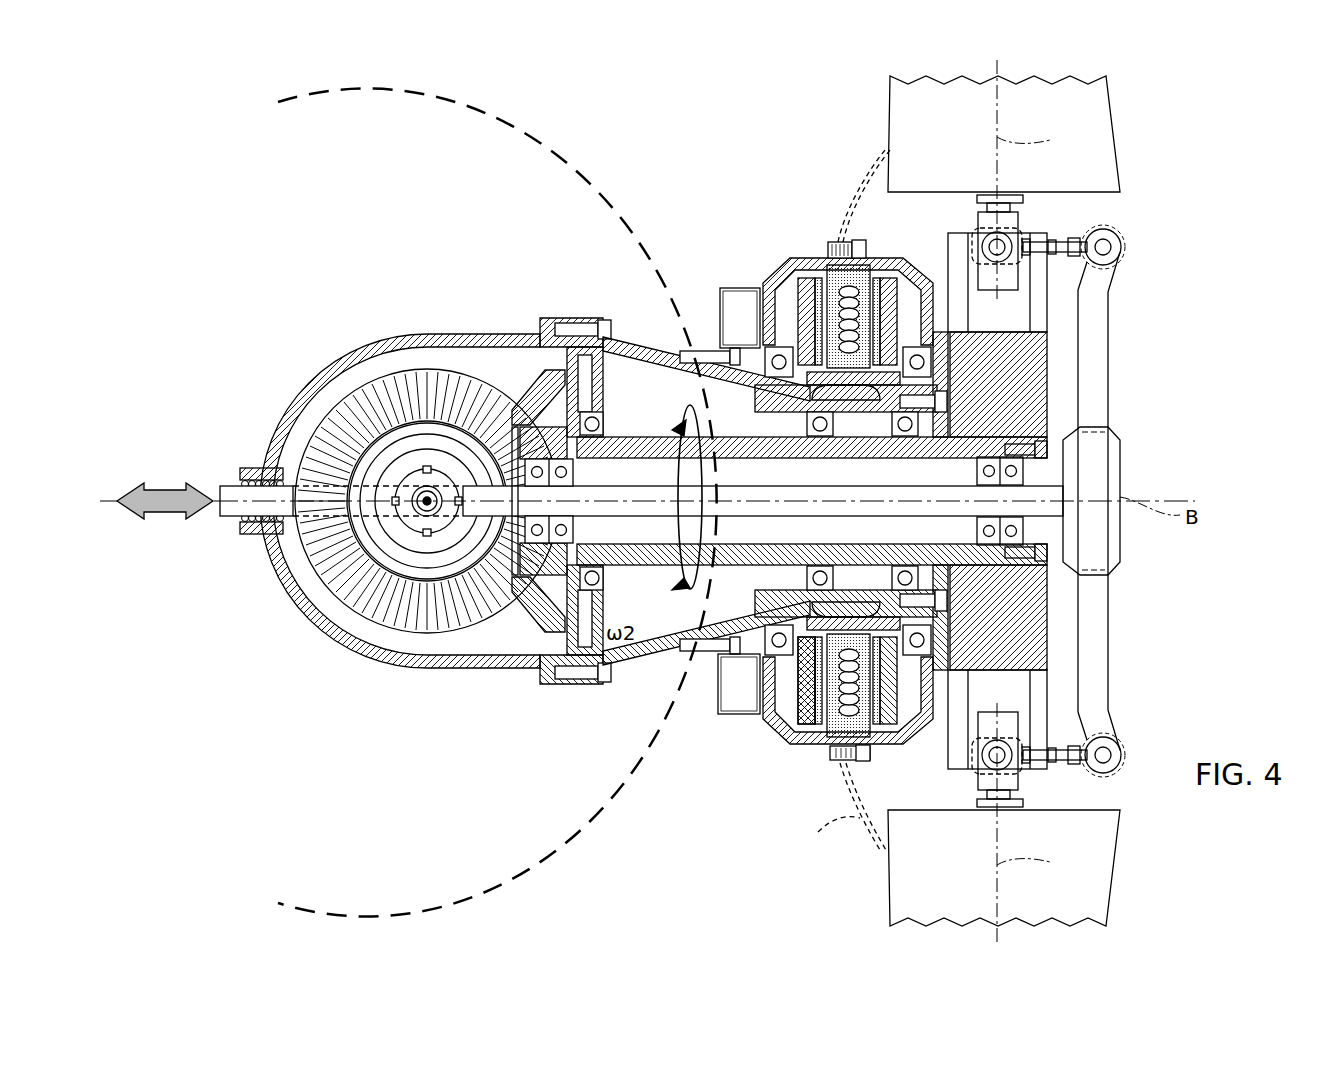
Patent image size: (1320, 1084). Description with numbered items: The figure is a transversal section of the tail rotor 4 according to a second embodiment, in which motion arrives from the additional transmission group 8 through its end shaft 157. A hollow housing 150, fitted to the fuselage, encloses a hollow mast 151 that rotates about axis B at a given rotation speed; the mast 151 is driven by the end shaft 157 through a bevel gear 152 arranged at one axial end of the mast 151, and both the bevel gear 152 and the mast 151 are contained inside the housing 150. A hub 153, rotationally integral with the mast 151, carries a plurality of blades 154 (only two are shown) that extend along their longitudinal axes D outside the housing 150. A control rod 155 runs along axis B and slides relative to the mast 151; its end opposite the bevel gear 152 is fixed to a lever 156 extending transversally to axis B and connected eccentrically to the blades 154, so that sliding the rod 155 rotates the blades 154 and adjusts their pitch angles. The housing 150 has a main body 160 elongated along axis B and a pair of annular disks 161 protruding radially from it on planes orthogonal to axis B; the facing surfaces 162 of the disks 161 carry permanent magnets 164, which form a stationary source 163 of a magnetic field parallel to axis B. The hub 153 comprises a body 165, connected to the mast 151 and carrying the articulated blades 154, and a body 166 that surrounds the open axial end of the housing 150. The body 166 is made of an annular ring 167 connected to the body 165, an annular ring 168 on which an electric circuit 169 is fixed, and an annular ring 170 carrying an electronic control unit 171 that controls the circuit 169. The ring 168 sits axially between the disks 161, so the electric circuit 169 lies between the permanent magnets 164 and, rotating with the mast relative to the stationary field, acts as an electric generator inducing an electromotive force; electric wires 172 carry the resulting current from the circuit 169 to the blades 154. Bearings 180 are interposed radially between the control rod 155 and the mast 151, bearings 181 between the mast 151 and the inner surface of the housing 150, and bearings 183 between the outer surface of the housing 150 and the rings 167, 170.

The tail rotor 4 is at (694, 246).
The additional transmission group 8 is at (425, 353).
The hollow housing 150 is at (392, 672).
The hollow mast 151 is at (740, 560).
The bevel gear 152 is at (550, 595).
The hub 153 is at (1010, 380).
The blades 154 is at (1118, 146).
The control rod 155 is at (1050, 508).
The lever 156 is at (1088, 672).
The end shaft 157 is at (417, 460).
The main body 160 is at (588, 310).
The annular disks 161 is at (805, 293).
The surface 162 is at (823, 298).
The source of magnetic field 163 is at (806, 360).
The permanent magnets 164 is at (817, 330).
The body 165 is at (998, 622).
The body 166 is at (792, 754).
The annular ring 167 is at (913, 720).
The annular ring 168 is at (867, 723).
The electric circuit 169 is at (852, 340).
The annular ring 170 is at (810, 697).
The electronic control unit 171 is at (737, 323).
The electric wires 172 is at (843, 502).
The bearings 180 is at (570, 468).
The bearings 181 is at (596, 424).
The bearings 183 is at (780, 367).